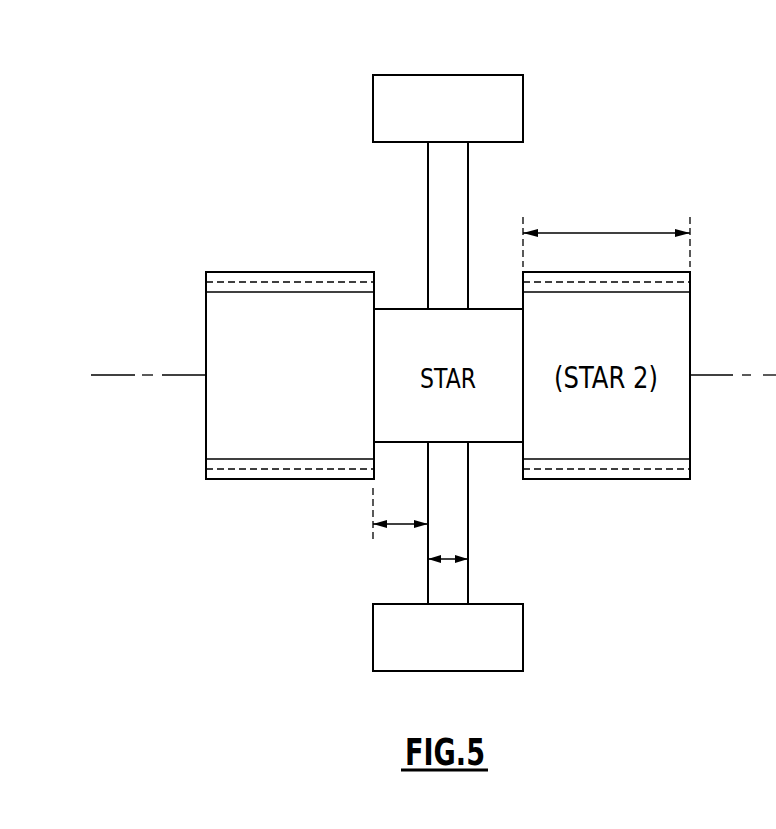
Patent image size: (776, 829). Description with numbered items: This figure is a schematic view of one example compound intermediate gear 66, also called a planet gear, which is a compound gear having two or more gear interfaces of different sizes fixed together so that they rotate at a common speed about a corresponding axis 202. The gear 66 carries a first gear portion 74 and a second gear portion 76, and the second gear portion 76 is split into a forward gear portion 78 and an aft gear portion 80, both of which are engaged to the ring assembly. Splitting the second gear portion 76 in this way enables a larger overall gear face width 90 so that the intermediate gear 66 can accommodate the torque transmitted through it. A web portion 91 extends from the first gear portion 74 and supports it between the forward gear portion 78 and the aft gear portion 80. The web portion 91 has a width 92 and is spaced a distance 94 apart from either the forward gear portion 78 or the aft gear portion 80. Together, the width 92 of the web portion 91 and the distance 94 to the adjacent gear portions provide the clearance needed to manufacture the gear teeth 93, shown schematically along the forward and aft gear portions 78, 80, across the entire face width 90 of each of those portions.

The intermediate gear 66 is at (540, 168).
The first gear portion 74 is at (503, 634).
The second gear portion 76 is at (316, 243).
The forward gear portion 78 is at (260, 446).
The aft gear portion 80 is at (637, 446).
The gear face width 90 is at (588, 233).
The web portion 91 is at (454, 508).
The width 92 is at (449, 558).
The gear teeth 93 is at (236, 279).
The distance 94 is at (398, 525).
The axis 202 is at (118, 375).